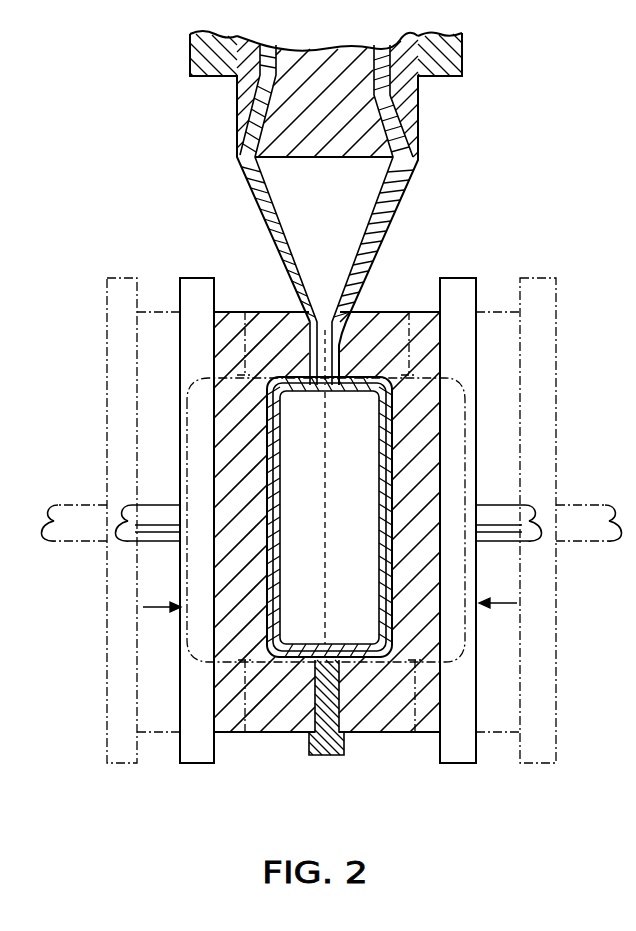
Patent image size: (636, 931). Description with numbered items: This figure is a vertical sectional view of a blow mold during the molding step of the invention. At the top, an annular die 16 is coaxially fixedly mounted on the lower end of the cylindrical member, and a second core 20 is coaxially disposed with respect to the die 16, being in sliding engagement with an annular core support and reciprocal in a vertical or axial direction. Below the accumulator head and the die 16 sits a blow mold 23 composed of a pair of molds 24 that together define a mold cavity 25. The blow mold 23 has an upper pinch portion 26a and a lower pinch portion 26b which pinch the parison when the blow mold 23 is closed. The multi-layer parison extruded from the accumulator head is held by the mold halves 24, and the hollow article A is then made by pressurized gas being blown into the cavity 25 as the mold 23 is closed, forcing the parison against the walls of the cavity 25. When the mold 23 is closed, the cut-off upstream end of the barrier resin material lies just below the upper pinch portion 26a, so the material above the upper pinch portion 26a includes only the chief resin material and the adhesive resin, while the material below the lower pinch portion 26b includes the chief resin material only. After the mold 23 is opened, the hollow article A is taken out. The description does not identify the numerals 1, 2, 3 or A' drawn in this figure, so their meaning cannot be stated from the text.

The preform 1 is at (270, 426).
The outer layer of preform 2 is at (390, 427).
The inner layer of preform 3 is at (392, 470).
The annular die 16 is at (419, 87).
The second core 20 is at (313, 147).
The blow mold 23 is at (497, 362).
The mold halves 24 is at (268, 320).
The mold cavity 25 is at (370, 560).
The upper pinch portion 26a is at (342, 368).
The lower pinch portion 26b is at (310, 667).
The hollow article A is at (151, 561).
The right press rod / direction A' is at (339, 488).